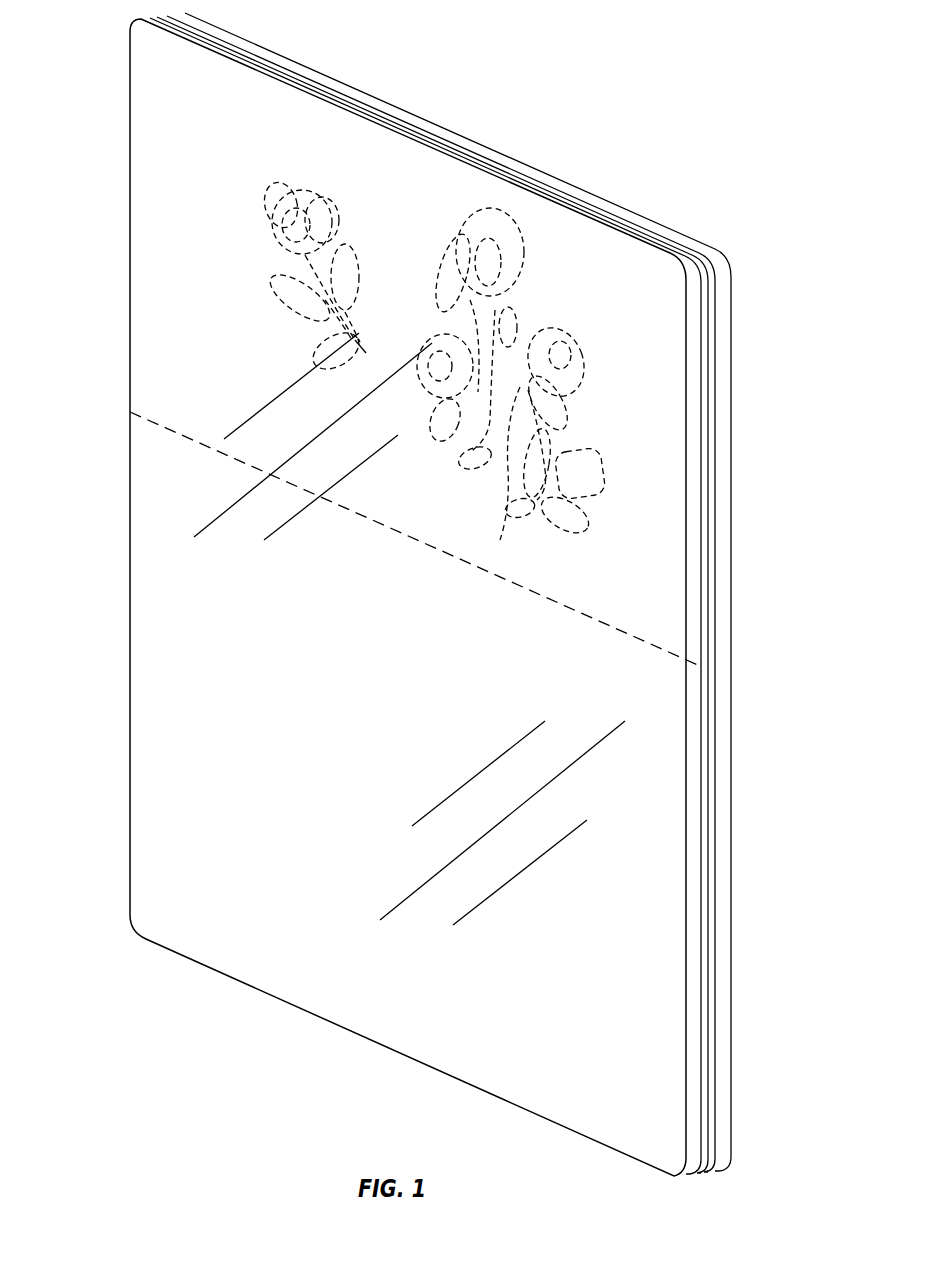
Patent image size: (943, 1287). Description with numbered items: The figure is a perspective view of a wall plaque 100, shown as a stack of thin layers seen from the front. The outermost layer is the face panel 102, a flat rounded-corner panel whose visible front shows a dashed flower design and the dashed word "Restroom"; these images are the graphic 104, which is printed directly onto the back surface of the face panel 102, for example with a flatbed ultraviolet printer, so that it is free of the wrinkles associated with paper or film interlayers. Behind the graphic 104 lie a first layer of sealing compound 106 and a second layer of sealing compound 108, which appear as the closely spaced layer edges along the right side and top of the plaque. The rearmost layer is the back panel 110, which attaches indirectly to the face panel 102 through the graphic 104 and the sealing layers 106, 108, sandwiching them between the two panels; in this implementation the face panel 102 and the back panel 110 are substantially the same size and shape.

The wall plaque 100 is at (675, 136).
The face panel 102 is at (149, 95).
The graphic 104 is at (701, 340).
The first layer of sealing compound 106 is at (708, 380).
The second layer of sealing compound 108 is at (715, 414).
The back panel 110 is at (722, 531).